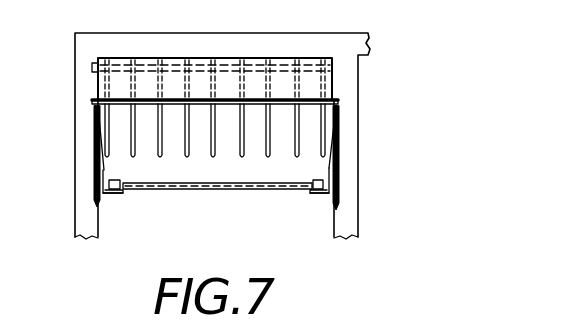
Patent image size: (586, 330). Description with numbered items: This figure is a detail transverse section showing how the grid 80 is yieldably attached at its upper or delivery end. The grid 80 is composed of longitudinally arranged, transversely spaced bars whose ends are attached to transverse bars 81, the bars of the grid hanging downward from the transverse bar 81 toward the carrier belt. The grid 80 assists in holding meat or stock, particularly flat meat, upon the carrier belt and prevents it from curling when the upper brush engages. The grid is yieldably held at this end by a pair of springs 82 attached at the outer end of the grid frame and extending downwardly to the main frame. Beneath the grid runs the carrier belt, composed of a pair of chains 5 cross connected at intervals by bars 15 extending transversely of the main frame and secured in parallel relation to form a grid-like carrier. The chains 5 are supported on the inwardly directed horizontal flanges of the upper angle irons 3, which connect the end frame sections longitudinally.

The angle irons 3 is at (115, 195).
The chains 5 is at (178, 18).
The bars 15 is at (222, 189).
The grid 80 is at (300, 133).
The transverse bars 81 is at (247, 100).
The springs 82 is at (98, 152).